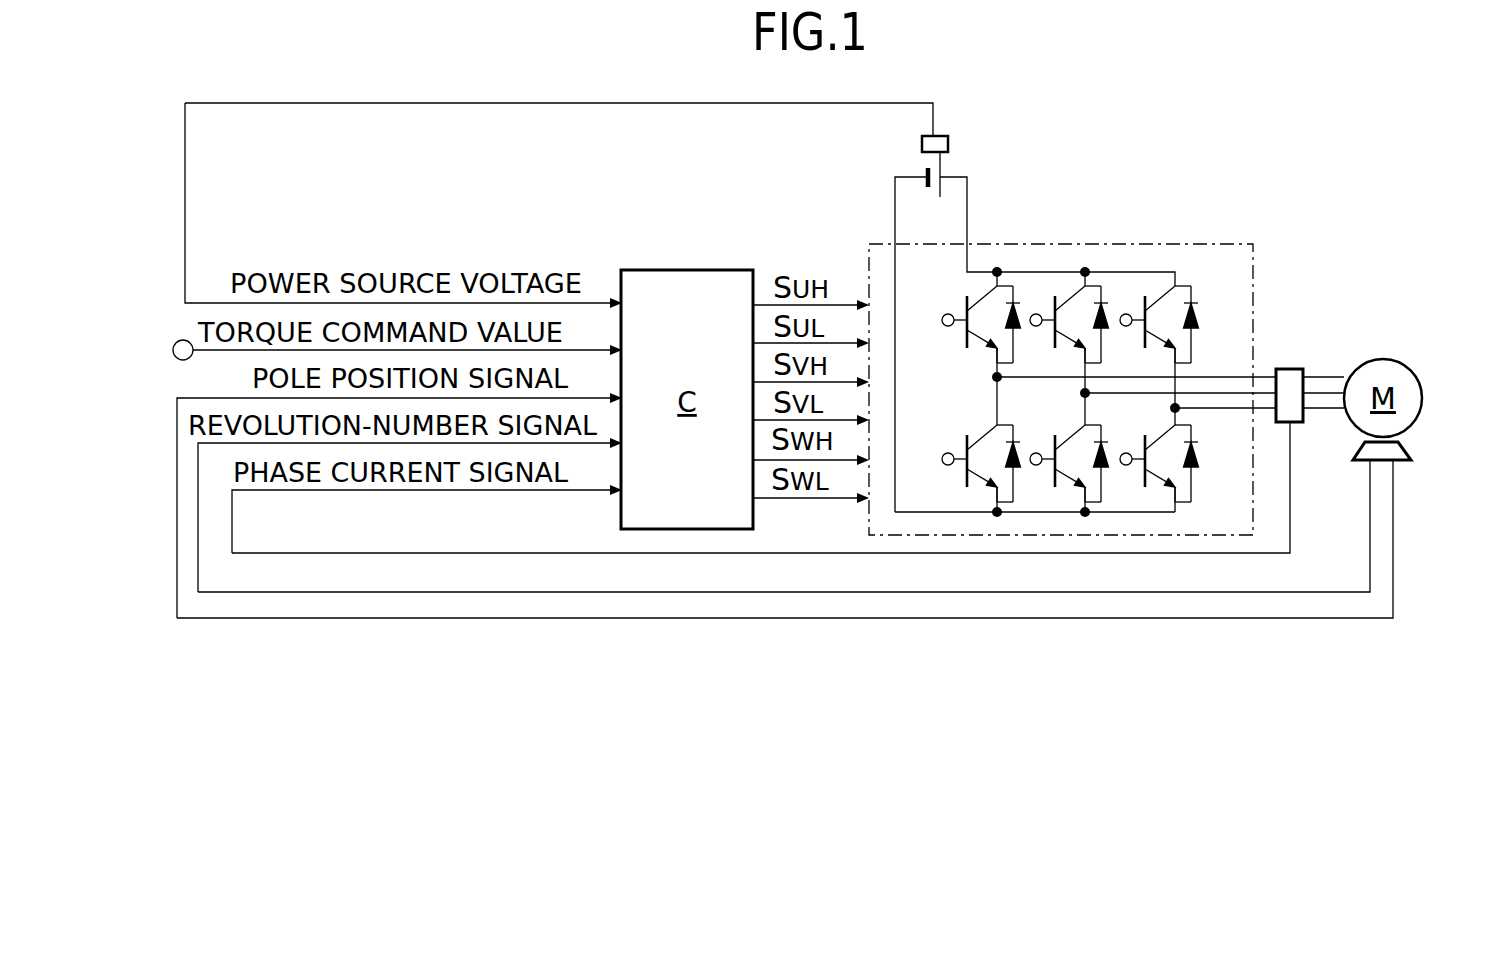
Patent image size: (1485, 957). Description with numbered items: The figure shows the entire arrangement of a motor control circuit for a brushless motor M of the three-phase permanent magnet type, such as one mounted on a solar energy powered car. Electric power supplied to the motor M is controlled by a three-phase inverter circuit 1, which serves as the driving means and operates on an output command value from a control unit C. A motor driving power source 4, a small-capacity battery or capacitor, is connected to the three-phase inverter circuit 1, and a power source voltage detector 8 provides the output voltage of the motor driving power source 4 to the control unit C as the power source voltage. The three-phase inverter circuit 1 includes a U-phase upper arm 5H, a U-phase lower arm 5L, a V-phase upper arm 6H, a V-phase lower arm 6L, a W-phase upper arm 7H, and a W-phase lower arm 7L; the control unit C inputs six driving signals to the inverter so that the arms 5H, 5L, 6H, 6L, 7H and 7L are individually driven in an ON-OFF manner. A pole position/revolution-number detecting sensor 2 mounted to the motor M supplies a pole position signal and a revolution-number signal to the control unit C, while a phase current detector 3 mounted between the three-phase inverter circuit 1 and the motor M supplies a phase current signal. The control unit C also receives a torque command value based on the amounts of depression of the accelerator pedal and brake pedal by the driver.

The 3-phase inverter circuit 1 is at (1153, 243).
The pole position/revolution-number detecting sensor 2 is at (1390, 452).
The phase current detector 3 is at (1296, 368).
The motor driving power source 4 is at (941, 163).
The power source voltage detector 8 is at (945, 137).
The U-phase upper arm 5H is at (982, 349).
The U-phase lower arm 5L is at (967, 428).
The V-phase upper arm 6H is at (1110, 338).
The V-phase lower arm 6L is at (1070, 428).
The W-phase upper arm 7H is at (1210, 314).
The W-phase lower arm 7L is at (1208, 462).